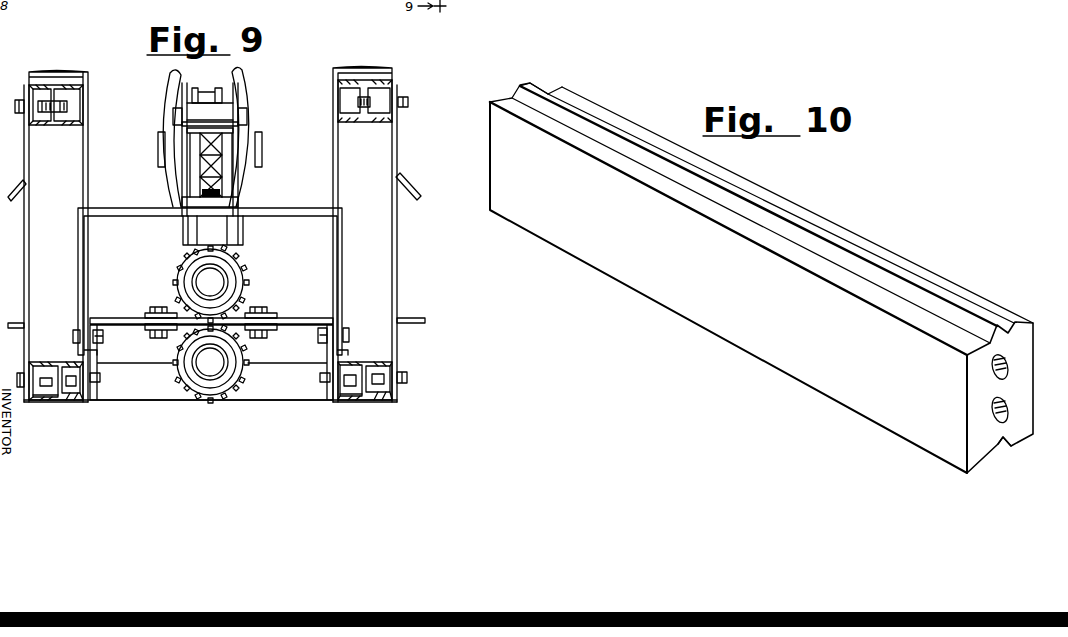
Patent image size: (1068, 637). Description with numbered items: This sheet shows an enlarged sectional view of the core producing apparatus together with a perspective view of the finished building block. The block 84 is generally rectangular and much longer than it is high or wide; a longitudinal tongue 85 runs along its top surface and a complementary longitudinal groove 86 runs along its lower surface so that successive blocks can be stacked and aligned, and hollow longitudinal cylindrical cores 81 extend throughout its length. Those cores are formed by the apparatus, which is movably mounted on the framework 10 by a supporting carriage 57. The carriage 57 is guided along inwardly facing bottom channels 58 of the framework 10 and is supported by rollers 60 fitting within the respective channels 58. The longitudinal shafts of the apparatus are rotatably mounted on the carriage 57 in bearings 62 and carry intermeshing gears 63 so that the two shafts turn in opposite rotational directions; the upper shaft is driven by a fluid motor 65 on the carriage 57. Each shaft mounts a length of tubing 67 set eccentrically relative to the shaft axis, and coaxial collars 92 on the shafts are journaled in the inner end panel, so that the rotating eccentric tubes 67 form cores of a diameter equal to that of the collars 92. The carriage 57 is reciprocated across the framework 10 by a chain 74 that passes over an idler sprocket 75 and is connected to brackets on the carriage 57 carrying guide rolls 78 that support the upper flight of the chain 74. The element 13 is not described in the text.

In FIG. 9, the framework 10 is at (410, 144).
In FIG. 9, the bearing block 13 is at (28, 97).
In FIG. 9, the supporting carriage 57 is at (351, 321).
In FIG. 9, the bottom channels 58 is at (75, 397).
In FIG. 9, the rollers 60 is at (82, 398).
In FIG. 9, the bearings 62 is at (248, 302).
In FIG. 9, the intermeshing gears 63 is at (247, 267).
In FIG. 9, the fluid motor 65 is at (207, 249).
In FIG. 9, the tubing 67 is at (189, 278).
In FIG. 9, the chain 74 is at (205, 87).
In FIG. 9, the idler sprocket 75 is at (217, 150).
In FIG. 9, the guide rolls 78 is at (210, 113).
In FIG. 10, the cores 81 is at (1008, 362).
In FIG. 10, the block 84 is at (670, 321).
In FIG. 10, the longitudinal tongue 85 is at (947, 295).
In FIG. 10, the longitudinal groove 86 is at (1000, 441).
In FIG. 9, the coaxial collars 92 is at (190, 298).